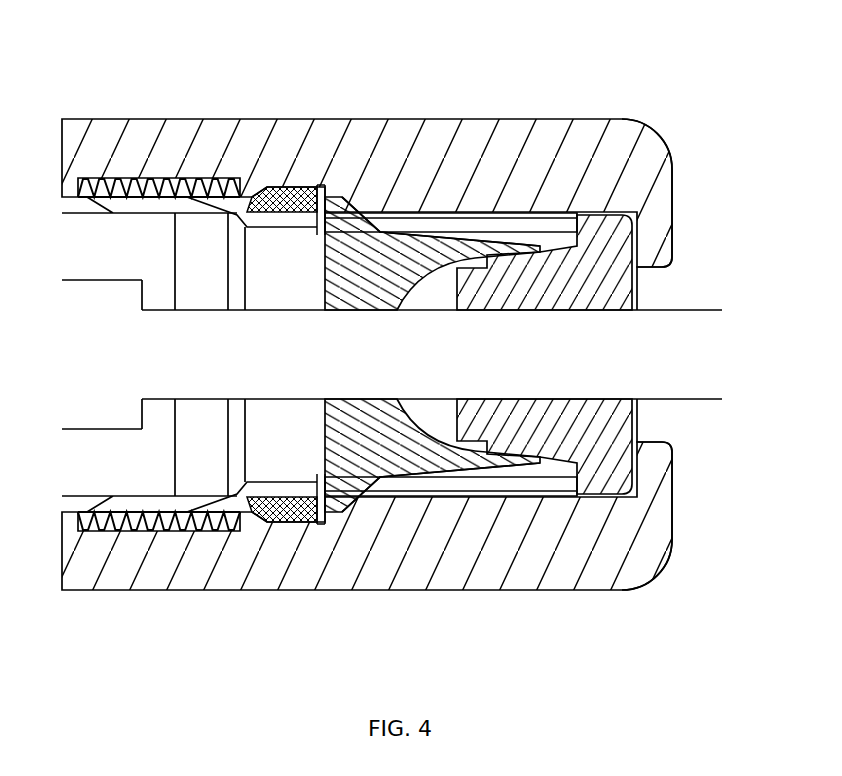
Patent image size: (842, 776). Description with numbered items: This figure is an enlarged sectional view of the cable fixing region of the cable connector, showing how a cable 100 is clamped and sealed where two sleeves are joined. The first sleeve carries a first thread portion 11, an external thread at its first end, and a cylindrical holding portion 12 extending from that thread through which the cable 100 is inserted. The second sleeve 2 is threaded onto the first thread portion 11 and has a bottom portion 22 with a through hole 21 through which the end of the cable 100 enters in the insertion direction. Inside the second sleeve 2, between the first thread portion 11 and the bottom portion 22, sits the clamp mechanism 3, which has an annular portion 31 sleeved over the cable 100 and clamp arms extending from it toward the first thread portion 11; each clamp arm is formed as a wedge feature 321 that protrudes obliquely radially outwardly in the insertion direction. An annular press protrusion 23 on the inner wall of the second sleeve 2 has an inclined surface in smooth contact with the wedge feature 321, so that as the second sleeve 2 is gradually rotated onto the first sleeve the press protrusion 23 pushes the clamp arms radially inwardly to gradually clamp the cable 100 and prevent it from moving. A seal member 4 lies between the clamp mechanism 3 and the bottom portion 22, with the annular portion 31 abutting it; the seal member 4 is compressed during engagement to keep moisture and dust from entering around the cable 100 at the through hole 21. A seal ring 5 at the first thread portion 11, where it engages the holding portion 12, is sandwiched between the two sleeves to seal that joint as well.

The second sleeve 2 is at (450, 530).
The through hole 21 is at (652, 410).
The bottom portion 22 is at (670, 222).
The press protrusion 23 is at (313, 507).
The clamp mechanism 3 is at (383, 253).
The annular portion 31 is at (513, 233).
The wedge feature 321 is at (350, 237).
The seal member 4 is at (583, 270).
The seal ring 5 is at (273, 513).
The first thread portion 11 is at (132, 200).
The holding portion 12 is at (250, 195).
The cable 100 is at (660, 345).